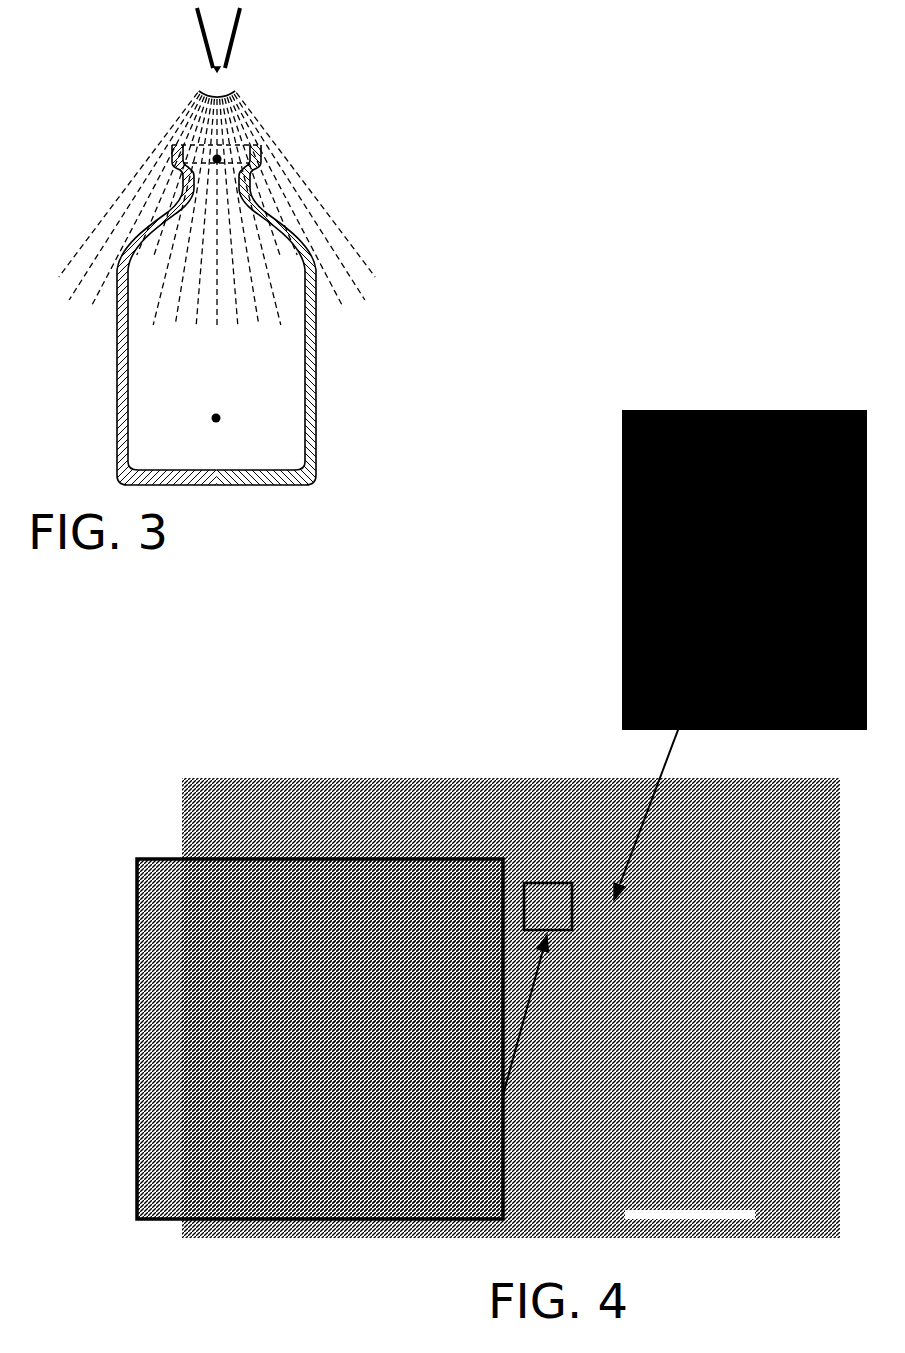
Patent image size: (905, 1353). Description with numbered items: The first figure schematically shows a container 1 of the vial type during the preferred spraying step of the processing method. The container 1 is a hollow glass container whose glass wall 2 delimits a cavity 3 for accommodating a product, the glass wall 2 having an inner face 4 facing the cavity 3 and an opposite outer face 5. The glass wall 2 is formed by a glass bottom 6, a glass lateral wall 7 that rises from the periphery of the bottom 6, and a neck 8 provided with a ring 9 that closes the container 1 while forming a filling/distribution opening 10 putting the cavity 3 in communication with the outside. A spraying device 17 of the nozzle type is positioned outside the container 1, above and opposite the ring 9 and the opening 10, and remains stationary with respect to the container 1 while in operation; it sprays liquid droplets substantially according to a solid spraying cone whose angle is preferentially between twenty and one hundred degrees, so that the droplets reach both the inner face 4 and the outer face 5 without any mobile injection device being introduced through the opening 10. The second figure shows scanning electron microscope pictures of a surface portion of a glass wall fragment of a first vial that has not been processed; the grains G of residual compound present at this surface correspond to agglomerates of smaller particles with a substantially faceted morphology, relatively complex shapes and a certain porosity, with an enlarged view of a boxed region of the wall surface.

In FIG. 3, the container 1 is at (146, 122).
In FIG. 3, the glass wall 2 is at (225, 315).
In FIG. 3, the cavity 3 is at (209, 418).
In FIG. 3, the inner face 4 is at (224, 315).
In FIG. 3, the outer face 5 is at (305, 442).
In FIG. 3, the glass bottom 6 is at (206, 500).
In FIG. 3, the glass lateral wall 7 is at (116, 363).
In FIG. 3, the neck 8 is at (168, 184).
In FIG. 3, the ring 9 is at (268, 153).
In FIG. 3, the filling/distribution opening 10 is at (210, 159).
In FIG. 3, the spraying device 17 is at (218, 33).
In FIG. 4, the grains G is at (455, 802).